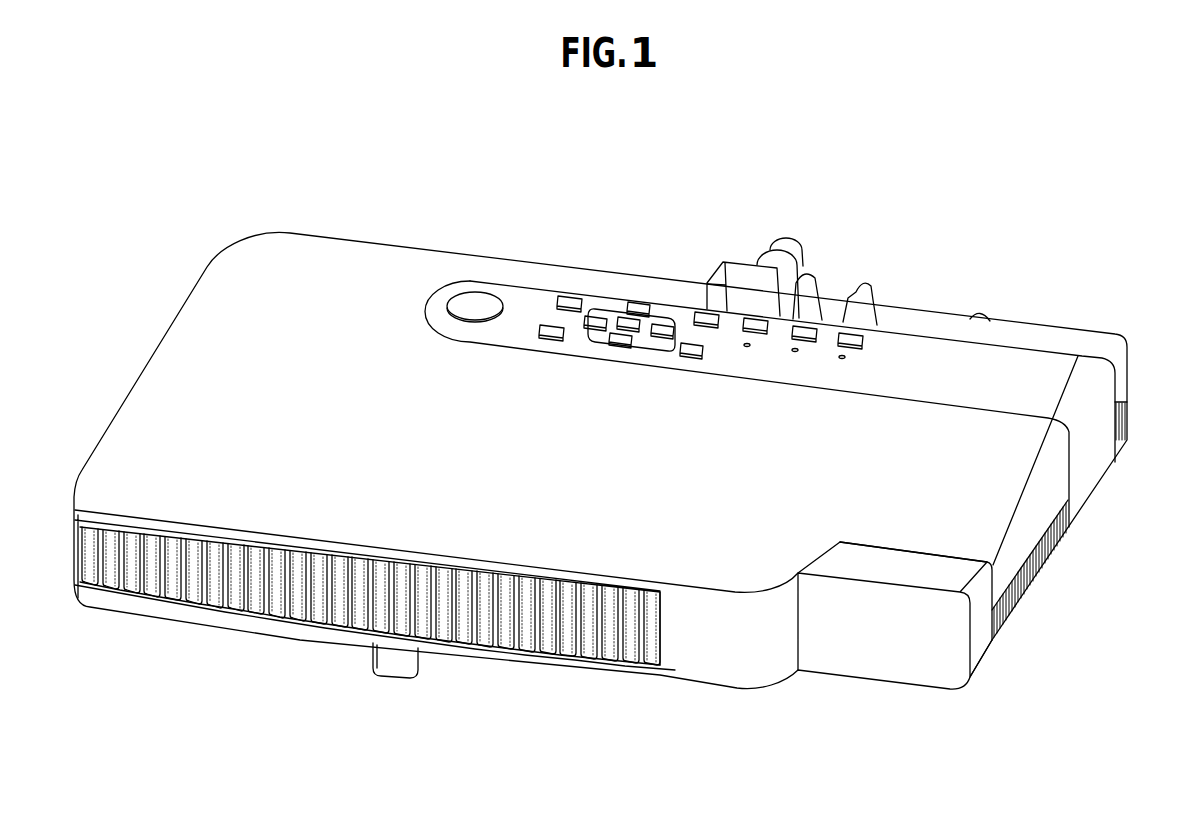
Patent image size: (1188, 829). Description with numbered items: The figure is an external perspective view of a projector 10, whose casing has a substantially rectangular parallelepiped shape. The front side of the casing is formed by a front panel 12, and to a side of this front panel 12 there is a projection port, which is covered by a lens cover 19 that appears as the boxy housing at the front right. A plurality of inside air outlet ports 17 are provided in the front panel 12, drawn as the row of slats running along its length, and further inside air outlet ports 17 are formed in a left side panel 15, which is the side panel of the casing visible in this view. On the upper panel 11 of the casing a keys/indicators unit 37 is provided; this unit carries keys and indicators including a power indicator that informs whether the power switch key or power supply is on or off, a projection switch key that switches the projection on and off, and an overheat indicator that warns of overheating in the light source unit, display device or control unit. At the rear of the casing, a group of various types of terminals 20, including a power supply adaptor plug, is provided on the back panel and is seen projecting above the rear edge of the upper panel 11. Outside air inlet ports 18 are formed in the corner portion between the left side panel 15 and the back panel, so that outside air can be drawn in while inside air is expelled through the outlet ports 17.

The projector 10 is at (710, 150).
The upper panel 11 is at (384, 258).
The front panel 12 is at (692, 638).
The left side panel 15 is at (1022, 538).
The inside air outlet ports 17 is at (612, 657).
The outside air inlet ports 18 is at (1122, 447).
The lens cover 19 is at (885, 652).
The terminals 20 is at (822, 254).
The keys/indicators unit 37 is at (604, 290).